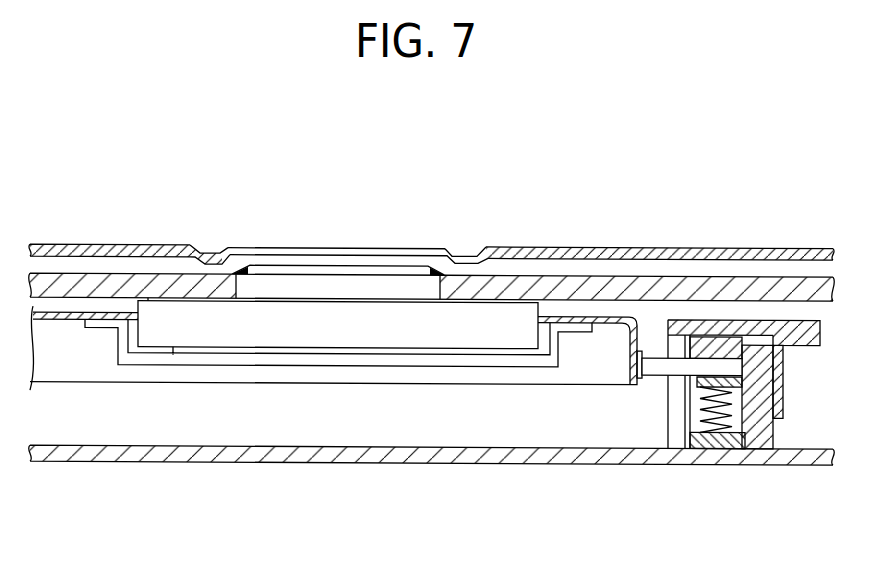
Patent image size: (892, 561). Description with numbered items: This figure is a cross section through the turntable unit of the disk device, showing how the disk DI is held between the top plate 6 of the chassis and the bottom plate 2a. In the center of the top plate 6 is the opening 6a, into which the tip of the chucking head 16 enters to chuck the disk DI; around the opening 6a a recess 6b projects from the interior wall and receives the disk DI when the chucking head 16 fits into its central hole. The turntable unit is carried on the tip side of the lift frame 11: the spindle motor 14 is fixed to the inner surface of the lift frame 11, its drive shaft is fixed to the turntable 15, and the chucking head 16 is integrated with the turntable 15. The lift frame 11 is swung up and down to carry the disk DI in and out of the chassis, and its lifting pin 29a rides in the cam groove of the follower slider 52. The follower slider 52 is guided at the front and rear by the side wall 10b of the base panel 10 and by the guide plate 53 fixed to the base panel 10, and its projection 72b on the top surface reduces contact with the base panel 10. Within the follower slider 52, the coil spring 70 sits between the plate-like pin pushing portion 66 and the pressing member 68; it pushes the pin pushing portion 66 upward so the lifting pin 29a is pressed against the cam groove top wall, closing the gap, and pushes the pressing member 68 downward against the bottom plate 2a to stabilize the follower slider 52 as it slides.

The bottom plate 2a is at (108, 461).
The top plate 6 is at (680, 245).
The opening 6a is at (242, 246).
The recess 6b is at (467, 246).
The disk DI is at (525, 293).
The turntable 15 is at (362, 303).
The chucking head 16 is at (303, 283).
The spindle motor 14 is at (205, 335).
The lift frame 11 is at (611, 317).
The projection 72b is at (725, 318).
The base panel 10 is at (805, 321).
The side wall 10b is at (679, 447).
The follower slider 52 is at (763, 349).
The guide plate 53 is at (785, 378).
The coil spring 70 is at (700, 400).
The pressing member 68 is at (736, 441).
The lifting pin 29a is at (636, 381).
The pin pushing portion 66 is at (673, 372).